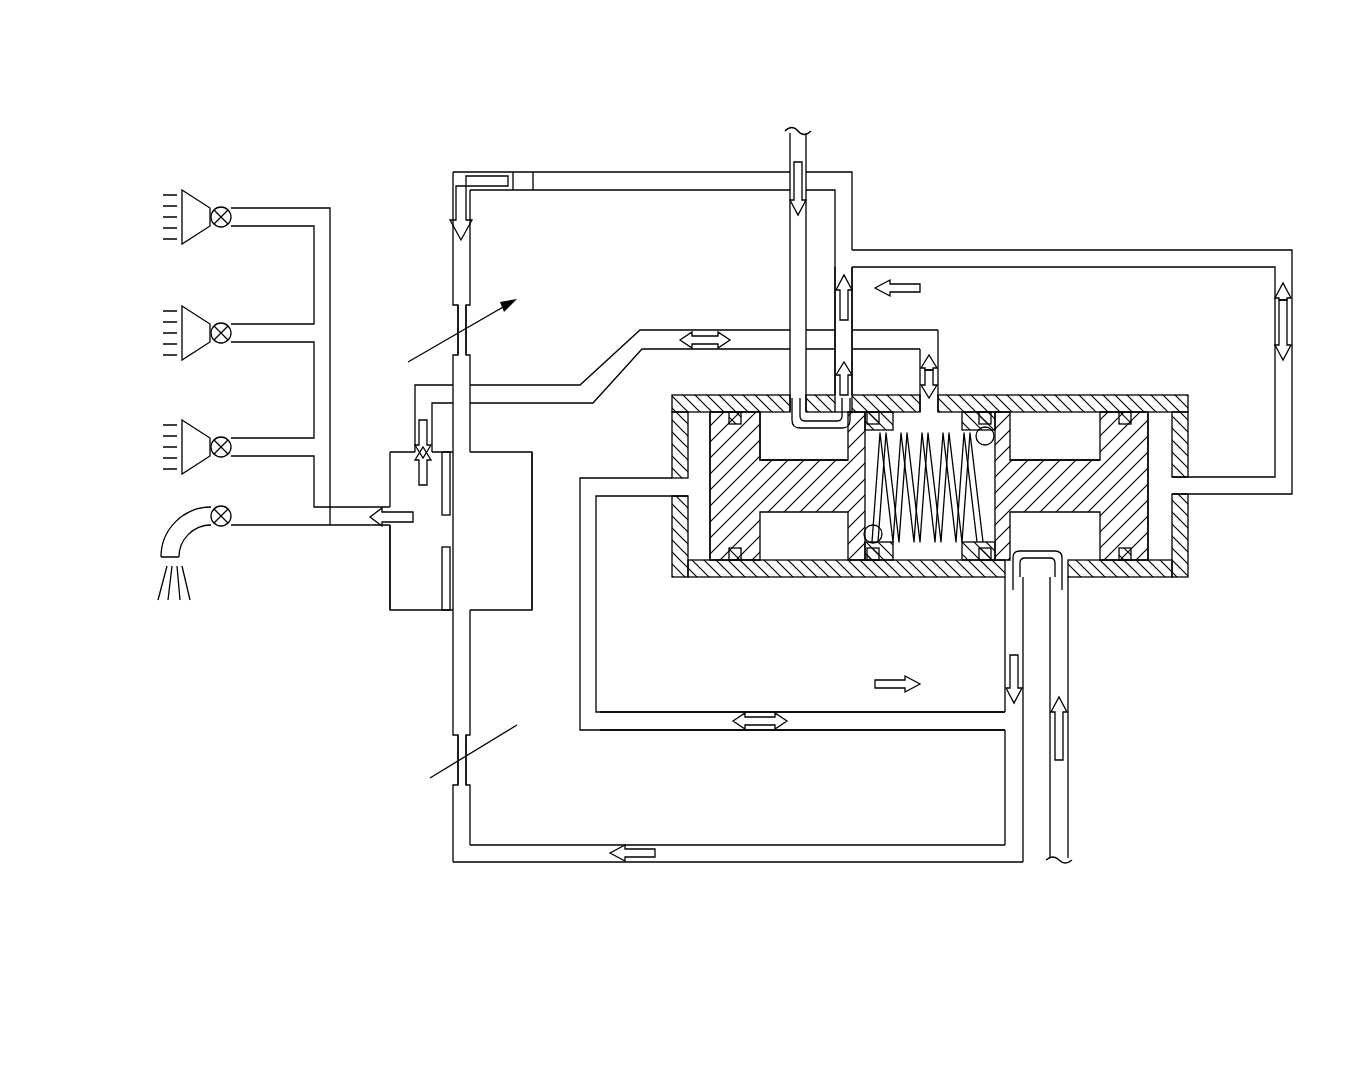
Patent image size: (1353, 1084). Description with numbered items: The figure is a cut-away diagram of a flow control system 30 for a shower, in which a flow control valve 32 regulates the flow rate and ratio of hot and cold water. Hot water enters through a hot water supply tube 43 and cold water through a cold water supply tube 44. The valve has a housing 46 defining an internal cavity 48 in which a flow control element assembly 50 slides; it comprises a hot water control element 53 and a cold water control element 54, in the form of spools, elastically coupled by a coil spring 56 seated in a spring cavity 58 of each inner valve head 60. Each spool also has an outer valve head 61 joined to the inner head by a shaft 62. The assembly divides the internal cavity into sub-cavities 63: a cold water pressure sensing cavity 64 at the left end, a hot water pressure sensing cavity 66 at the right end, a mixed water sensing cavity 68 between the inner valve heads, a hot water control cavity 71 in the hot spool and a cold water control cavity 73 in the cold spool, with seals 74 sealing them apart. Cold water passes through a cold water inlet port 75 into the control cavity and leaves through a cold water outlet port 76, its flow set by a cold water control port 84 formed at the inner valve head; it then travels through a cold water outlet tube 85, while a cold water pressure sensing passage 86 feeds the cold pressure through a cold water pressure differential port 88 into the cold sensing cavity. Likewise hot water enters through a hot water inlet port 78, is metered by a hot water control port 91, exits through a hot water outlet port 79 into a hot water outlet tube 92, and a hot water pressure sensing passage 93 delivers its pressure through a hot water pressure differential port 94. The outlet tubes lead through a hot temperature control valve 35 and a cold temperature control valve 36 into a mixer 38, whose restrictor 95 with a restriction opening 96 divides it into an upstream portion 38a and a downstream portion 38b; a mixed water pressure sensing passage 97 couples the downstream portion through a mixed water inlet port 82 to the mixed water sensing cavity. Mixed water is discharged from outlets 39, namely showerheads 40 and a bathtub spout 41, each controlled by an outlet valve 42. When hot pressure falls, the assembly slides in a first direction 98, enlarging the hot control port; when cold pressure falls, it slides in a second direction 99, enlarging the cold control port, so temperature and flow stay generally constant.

The flow control system 30 is at (1243, 172).
The flow control valve 32 is at (1112, 395).
The hot temperature control valve 35 is at (487, 303).
The cold temperature control valve 36 is at (480, 748).
The mixer 38 is at (410, 452).
The upstream portion 38a is at (508, 488).
The downstream portion 38b is at (398, 575).
The outlets 39 is at (155, 190).
The showerhead 40 is at (200, 195).
The bathtub spout 41 is at (183, 522).
The outlet valve 42 is at (230, 210).
The hot water supply tube 43 is at (808, 150).
The cold water supply tube 44 is at (1070, 692).
The housing 46 is at (1185, 395).
The internal cavity 48 is at (1162, 541).
The flow control element assembly 50 is at (1140, 572).
The hot water control element 53 is at (715, 440).
The cold water control element 54 is at (1150, 445).
The spring 56 is at (960, 440).
The spring cavity 58 is at (880, 545).
The inner valve head 60 is at (995, 437).
The outer valve head 61 is at (1130, 574).
The shaft 62 is at (1058, 430).
The sub-cavities 63 is at (1040, 458).
The cold water pressure sensing cavity 64 is at (694, 572).
The hot water pressure sensing cavity 66 is at (1175, 502).
The mixed water sensing cavity 68 is at (935, 556).
The hot water control cavity 71 is at (770, 428).
The cold water control cavity 73 is at (1083, 576).
The seal 74 is at (986, 412).
The cold water inlet port 75 is at (1063, 594).
The cold water outlet port 76 is at (1006, 590).
The hot water inlet port 78 is at (794, 396).
The hot water outlet port 79 is at (856, 396).
The mixed water inlet port 82 is at (932, 398).
The cold water control port 84 is at (1020, 594).
The cold water outlet tube 85 is at (930, 845).
The cold water pressure sensing passage 86 is at (850, 730).
The cold water pressure differential port 88 is at (668, 491).
The hot water control port 91 is at (840, 395).
The hot water outlet tube 92 is at (855, 188).
The hot water pressure sensing passage 93 is at (1030, 250).
The hot water pressure differential port 94 is at (1195, 475).
The restrictor 95 is at (443, 593).
The restriction opening 96 is at (462, 540).
The mixed water pressure sensing passage 97 is at (640, 330).
The first direction 98 is at (888, 680).
The second direction 99 is at (898, 275).